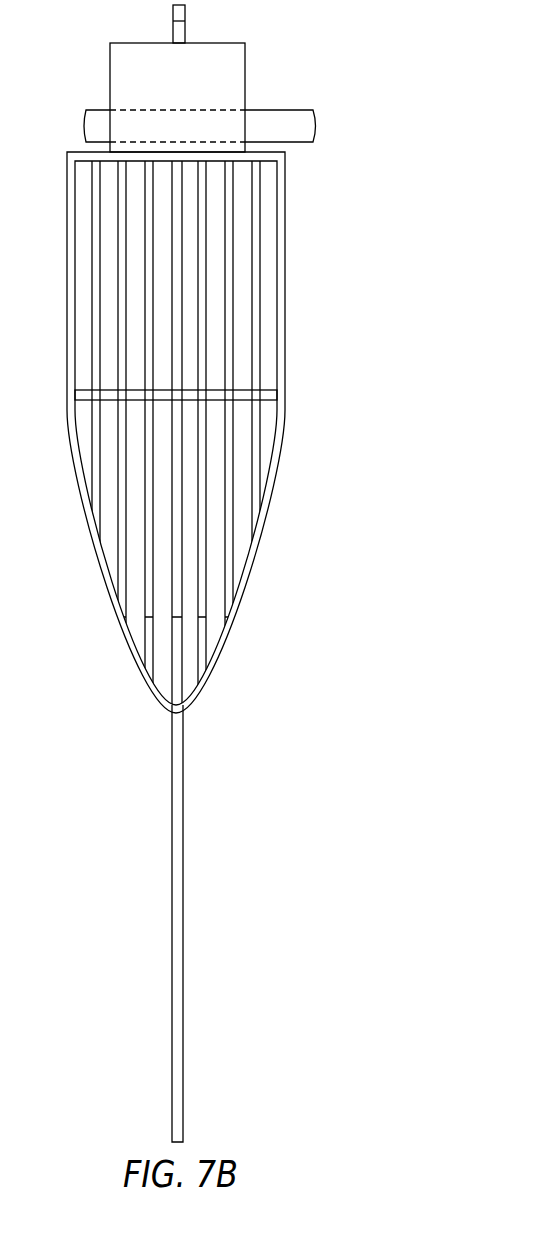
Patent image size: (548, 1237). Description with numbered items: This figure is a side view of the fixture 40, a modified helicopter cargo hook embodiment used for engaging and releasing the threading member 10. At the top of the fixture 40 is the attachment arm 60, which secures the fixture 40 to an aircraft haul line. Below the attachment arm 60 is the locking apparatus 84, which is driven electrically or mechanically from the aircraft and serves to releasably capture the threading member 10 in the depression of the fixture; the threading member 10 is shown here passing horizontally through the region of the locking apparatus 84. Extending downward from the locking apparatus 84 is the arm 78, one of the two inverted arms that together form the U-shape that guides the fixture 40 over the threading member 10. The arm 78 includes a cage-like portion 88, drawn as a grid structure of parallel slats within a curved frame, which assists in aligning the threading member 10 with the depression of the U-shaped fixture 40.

The threading member 10 is at (260, 108).
The fixture 40 is at (298, 306).
The attachment arm 60 is at (187, 33).
The arm 78 is at (73, 518).
The locking apparatus 84 is at (193, 96).
The cage-like portion 88 is at (285, 463).